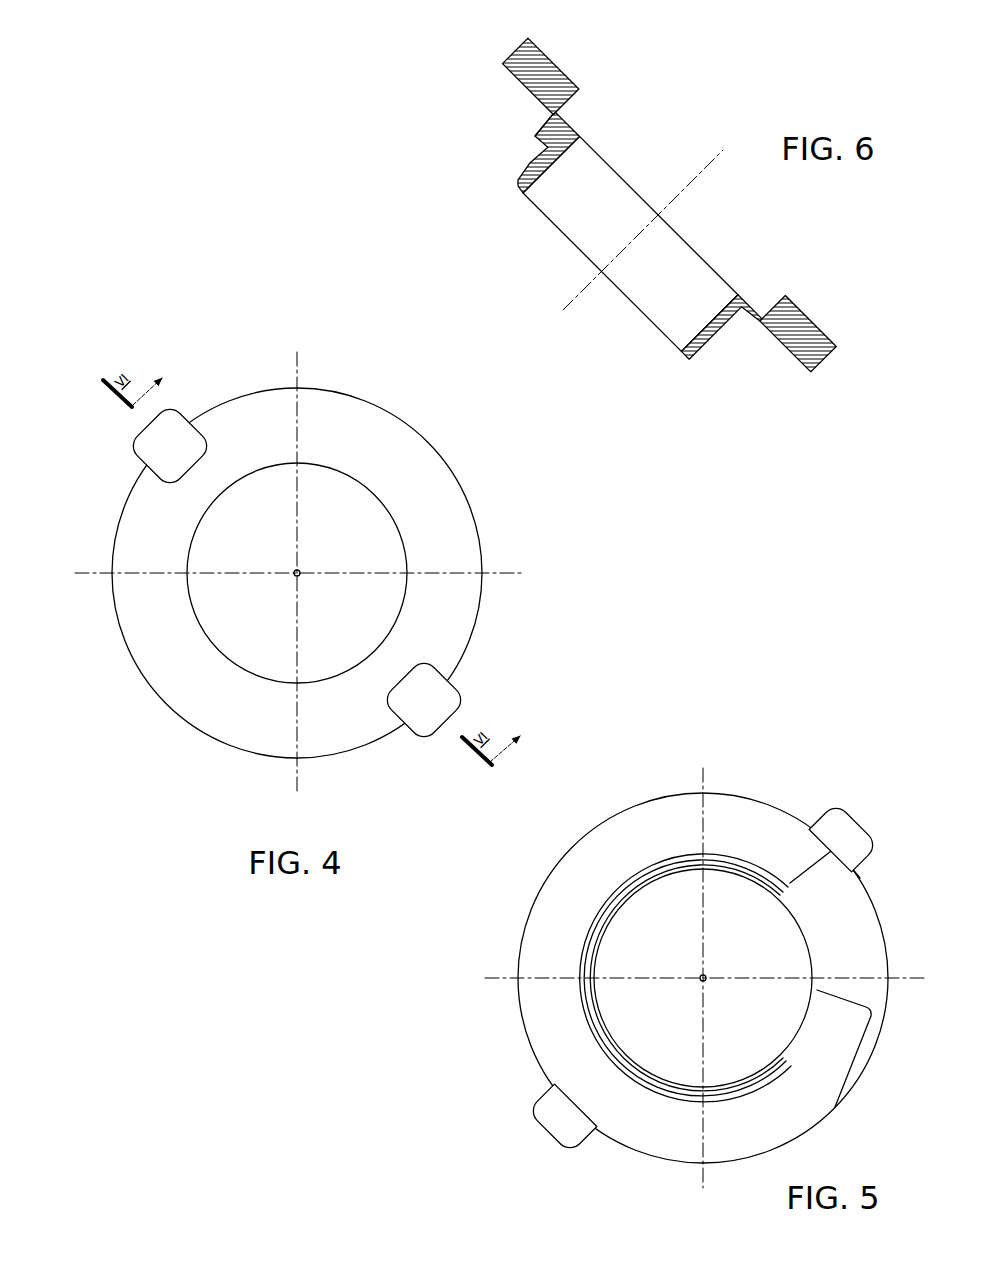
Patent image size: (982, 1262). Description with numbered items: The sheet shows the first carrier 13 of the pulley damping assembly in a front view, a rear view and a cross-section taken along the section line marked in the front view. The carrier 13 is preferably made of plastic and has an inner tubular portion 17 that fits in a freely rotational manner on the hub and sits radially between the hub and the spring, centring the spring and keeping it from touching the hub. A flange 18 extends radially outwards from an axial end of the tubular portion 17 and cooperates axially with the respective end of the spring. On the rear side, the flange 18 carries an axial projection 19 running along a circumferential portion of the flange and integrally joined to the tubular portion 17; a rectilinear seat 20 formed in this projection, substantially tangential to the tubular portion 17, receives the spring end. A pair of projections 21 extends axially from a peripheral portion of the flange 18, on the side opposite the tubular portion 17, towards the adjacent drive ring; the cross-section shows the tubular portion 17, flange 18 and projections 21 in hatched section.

In FIG. 4, the carrier 13 is at (480, 500).
In FIG. 5, the carrier 13 is at (514, 961).
In FIG. 6, the carrier 13 is at (722, 356).
In FIG. 5, the inner tubular portion 17 is at (595, 1018).
In FIG. 6, the inner tubular portion 17 is at (532, 174).
In FIG. 4, the flange 18 is at (445, 605).
In FIG. 5, the flange 18 is at (563, 927).
In FIG. 6, the flange 18 is at (754, 310).
In FIG. 5, the axial projection 19 is at (852, 948).
In FIG. 5, the rectilinear seat 20 is at (856, 1040).
In FIG. 6, the rectilinear seat 20 is at (543, 127).
In FIG. 4, the projections 21 is at (178, 430).
In FIG. 5, the projections 21 is at (851, 840).
In FIG. 6, the projections 21 is at (561, 72).